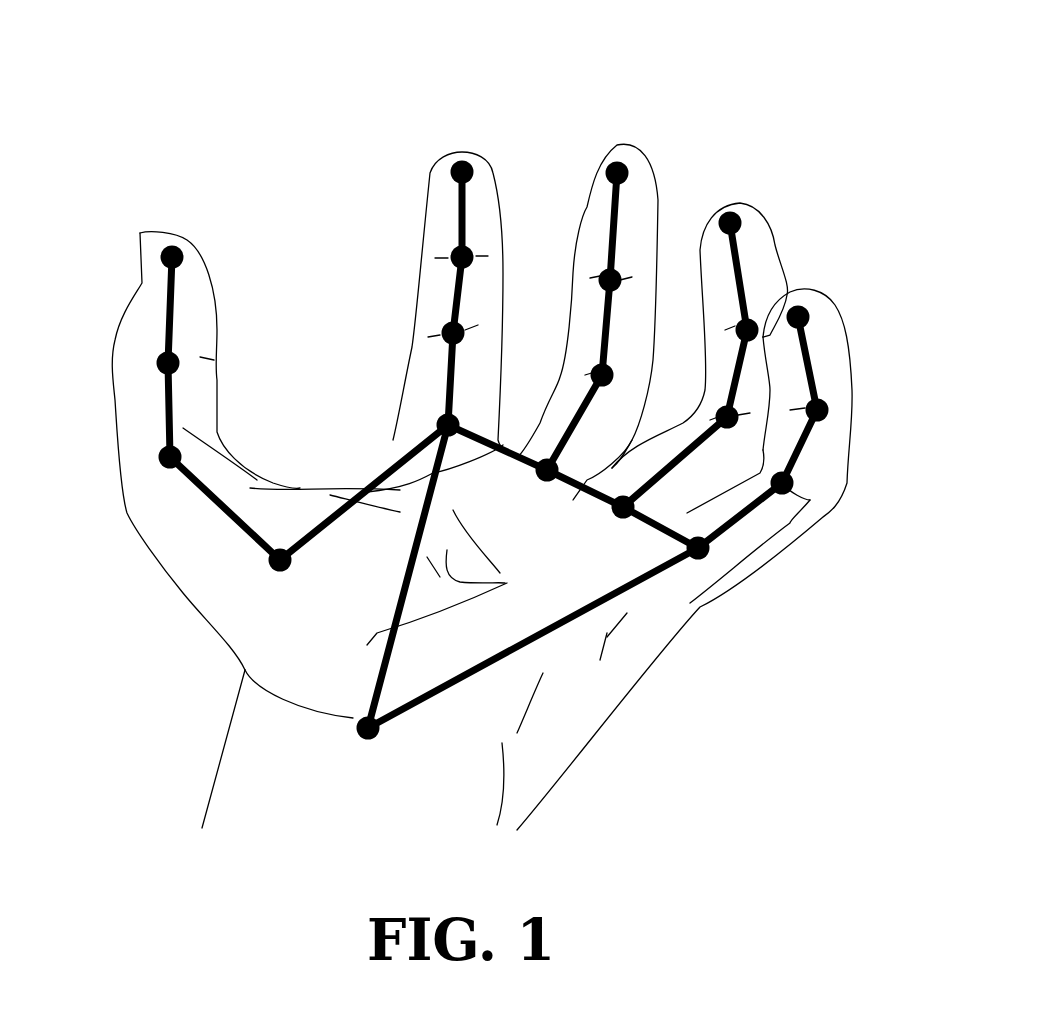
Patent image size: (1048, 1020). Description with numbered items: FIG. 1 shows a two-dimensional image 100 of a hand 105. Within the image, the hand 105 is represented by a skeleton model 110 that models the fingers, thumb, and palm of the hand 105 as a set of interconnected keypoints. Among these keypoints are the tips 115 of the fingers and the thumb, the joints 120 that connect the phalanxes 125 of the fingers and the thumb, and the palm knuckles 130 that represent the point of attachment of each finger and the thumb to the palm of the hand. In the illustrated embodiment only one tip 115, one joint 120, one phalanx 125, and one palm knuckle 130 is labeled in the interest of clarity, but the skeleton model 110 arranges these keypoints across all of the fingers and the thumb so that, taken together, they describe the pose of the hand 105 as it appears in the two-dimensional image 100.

The two-dimensional image 100 is at (927, 98).
The hand 105 is at (218, 782).
The skeleton model 110 is at (493, 406).
The tips 115 is at (488, 168).
The joints 120 is at (450, 255).
The phalanxes 125 is at (453, 307).
The palm knuckles 130 is at (432, 427).